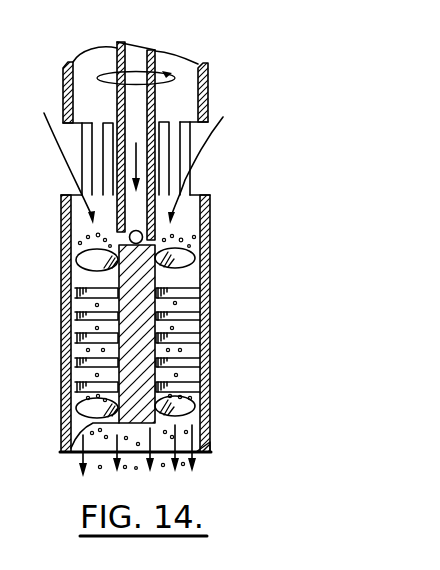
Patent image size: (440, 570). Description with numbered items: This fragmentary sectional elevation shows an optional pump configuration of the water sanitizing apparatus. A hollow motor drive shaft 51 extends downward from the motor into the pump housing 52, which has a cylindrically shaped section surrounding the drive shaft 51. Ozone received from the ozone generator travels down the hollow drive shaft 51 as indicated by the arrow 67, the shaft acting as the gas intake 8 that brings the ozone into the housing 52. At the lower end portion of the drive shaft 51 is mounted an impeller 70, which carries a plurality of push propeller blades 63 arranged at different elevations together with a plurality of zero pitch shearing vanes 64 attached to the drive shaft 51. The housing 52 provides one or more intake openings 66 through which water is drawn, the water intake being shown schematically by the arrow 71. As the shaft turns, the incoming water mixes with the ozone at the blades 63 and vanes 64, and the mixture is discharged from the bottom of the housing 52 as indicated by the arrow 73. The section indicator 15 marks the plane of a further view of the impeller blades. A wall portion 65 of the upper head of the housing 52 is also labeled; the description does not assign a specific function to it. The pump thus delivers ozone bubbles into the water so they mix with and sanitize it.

The gas intake 8 is at (133, 58).
The motor drive shaft 51 is at (157, 54).
The housing 52 is at (208, 225).
The push propeller blades 63 is at (80, 268).
The zero pitch shearing vanes 64 is at (190, 360).
The head wall 65 is at (207, 88).
The intake opening 66 is at (72, 138).
The arrow (ozone flow) 67 is at (116, 122).
The impeller 70 is at (68, 453).
The arrow (water intake) 71 is at (203, 161).
The arrow (discharge) 73 is at (210, 453).
The reservoir 15 is at (43, 235).